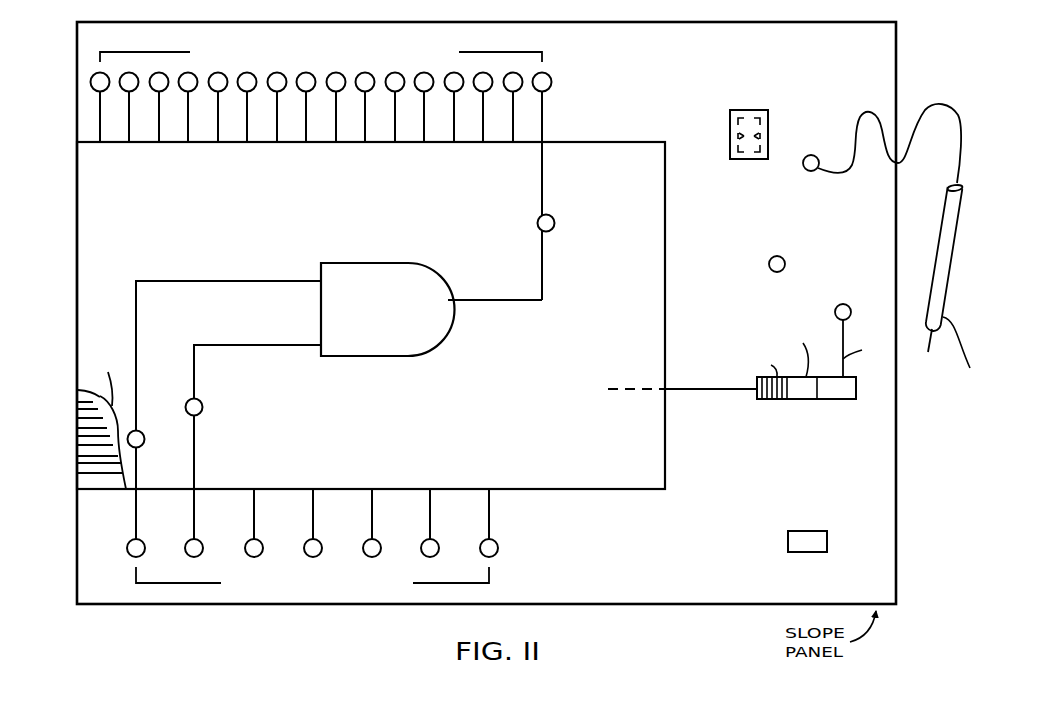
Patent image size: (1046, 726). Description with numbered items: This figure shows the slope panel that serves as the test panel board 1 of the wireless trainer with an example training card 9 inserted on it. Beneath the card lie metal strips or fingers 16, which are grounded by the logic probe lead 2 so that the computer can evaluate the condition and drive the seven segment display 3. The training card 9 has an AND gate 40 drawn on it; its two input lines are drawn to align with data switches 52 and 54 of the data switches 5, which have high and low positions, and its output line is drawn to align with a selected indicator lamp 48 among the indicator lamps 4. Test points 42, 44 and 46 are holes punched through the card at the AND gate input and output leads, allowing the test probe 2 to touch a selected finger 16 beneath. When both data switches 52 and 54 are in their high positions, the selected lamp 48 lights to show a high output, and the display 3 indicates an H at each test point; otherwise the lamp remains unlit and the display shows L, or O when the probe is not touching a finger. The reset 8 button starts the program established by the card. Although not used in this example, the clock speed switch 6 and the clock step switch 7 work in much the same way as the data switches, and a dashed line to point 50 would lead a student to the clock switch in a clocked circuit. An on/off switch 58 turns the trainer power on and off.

The test panel board 1 is at (85, 457).
The logic probe lead 2 is at (946, 292).
The seven segment display 3 is at (745, 110).
The indicator lamps 4 is at (564, 71).
The data switches 5 is at (512, 548).
The clock speed switch 6 is at (833, 400).
The clock step switch 7 is at (845, 304).
The reset button 8 is at (768, 269).
The training card 9 is at (457, 450).
The metal strips or fingers 16 is at (104, 374).
The AND gate 40 is at (362, 263).
The test point 42 is at (143, 442).
The test point 44 is at (216, 402).
The test point 46 is at (554, 228).
The indicator lamp 48 is at (548, 100).
The point 50 is at (721, 392).
The data switch 52 is at (134, 518).
The data switch 54 is at (196, 502).
The on/off switch 58 is at (827, 540).